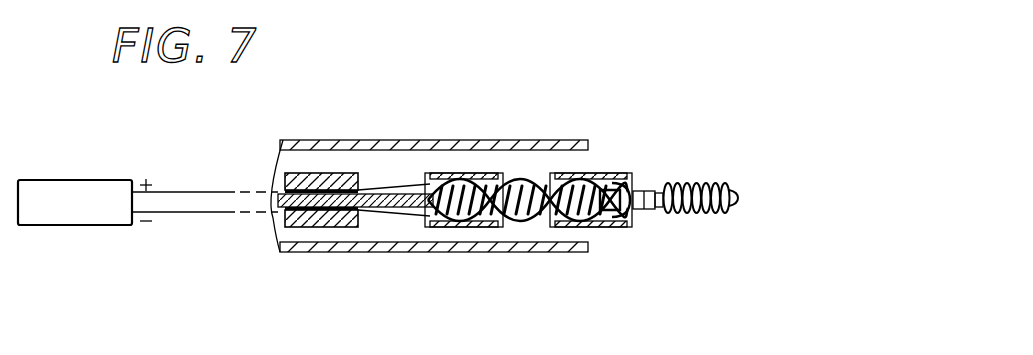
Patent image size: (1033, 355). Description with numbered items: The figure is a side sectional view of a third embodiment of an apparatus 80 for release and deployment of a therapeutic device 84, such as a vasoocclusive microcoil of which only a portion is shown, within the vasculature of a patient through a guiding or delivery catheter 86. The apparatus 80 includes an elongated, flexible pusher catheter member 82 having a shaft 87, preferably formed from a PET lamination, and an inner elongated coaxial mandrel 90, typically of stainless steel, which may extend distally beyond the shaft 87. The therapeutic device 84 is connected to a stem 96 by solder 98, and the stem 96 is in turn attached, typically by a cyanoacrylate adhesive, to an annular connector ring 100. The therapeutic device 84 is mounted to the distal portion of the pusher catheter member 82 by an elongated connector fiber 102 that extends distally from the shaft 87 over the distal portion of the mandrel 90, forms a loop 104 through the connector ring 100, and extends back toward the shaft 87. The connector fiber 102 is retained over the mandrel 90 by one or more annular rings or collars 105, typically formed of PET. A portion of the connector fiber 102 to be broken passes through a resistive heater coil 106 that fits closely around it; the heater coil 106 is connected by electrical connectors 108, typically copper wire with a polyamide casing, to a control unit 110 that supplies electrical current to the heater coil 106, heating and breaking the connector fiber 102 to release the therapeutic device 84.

The apparatus 80 is at (646, 151).
The pusher catheter member 82 is at (318, 170).
The therapeutic device 84 is at (730, 213).
The guiding or delivery catheter 86 is at (488, 140).
The shaft 87 is at (330, 222).
The mandrel 90 is at (380, 210).
The stem 96 is at (661, 212).
The solder 98 is at (687, 213).
The connector ring 100 is at (674, 185).
The connector fiber 102 is at (517, 180).
The loop 104 is at (628, 228).
The annular rings or collars 105 is at (463, 173).
The resistive heater coil 106 is at (630, 177).
The electrical connectors 108 is at (397, 188).
The control unit 110 is at (108, 226).